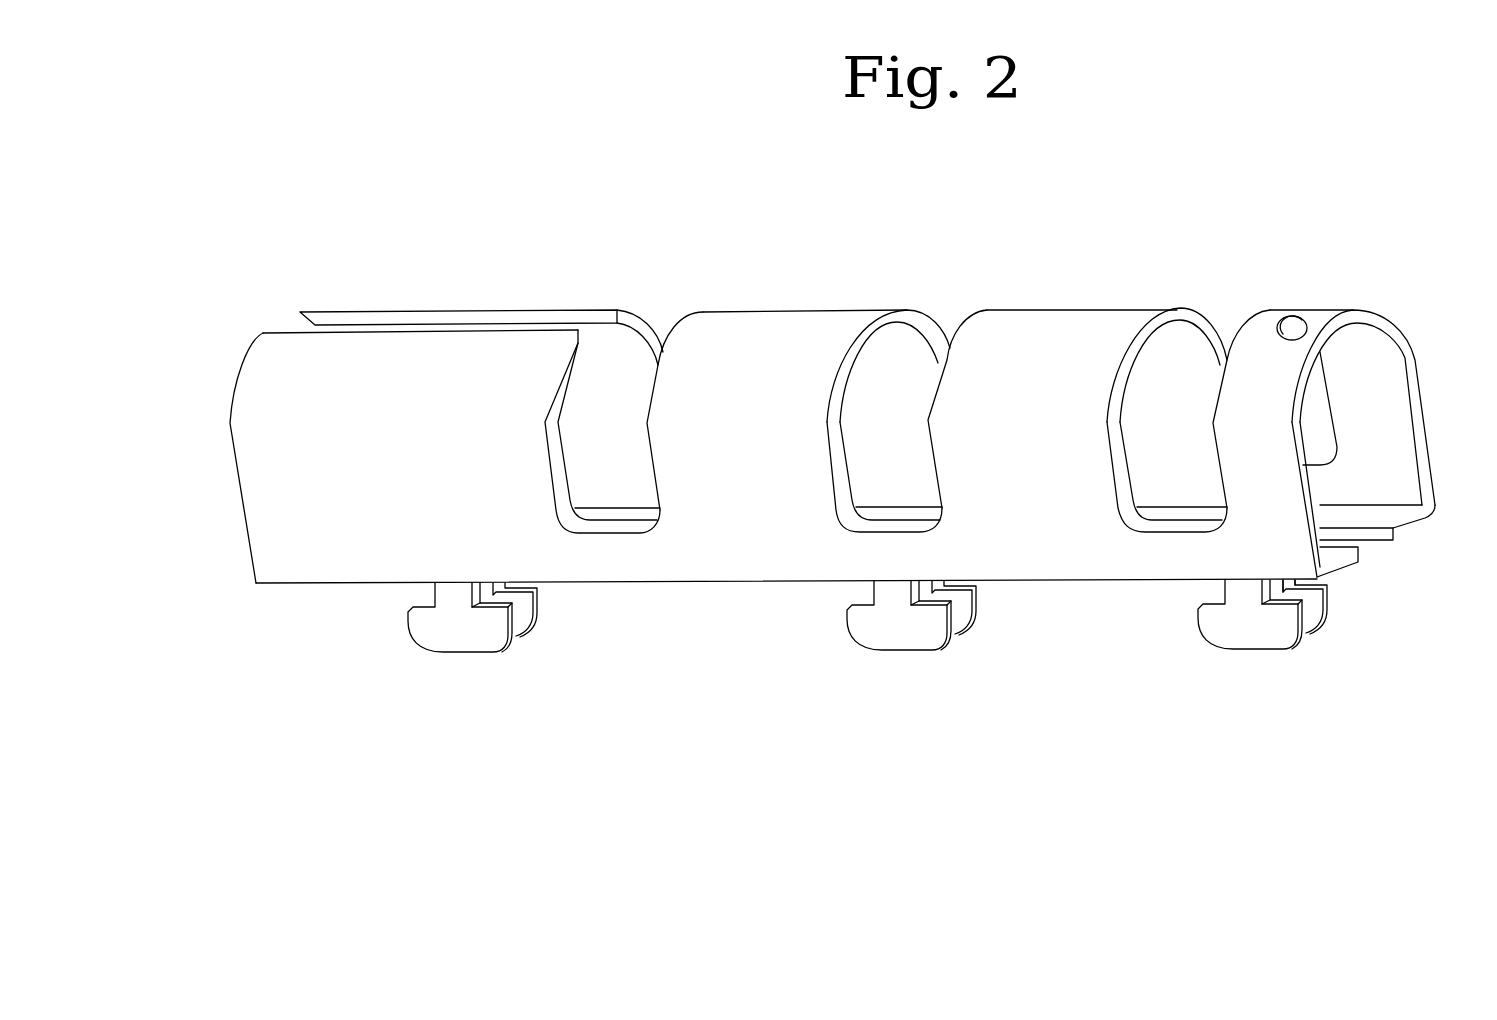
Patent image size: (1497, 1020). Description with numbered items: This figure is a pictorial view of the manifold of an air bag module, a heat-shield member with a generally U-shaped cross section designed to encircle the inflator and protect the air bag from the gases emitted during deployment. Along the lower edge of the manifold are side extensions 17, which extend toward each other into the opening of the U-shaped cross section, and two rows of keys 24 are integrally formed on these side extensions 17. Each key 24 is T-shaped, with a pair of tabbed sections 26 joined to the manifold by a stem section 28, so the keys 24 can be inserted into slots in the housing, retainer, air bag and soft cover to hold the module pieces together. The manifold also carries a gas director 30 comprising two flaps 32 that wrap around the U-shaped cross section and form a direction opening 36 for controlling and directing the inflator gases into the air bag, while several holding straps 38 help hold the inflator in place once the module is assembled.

The gas director 30 is at (245, 327).
The flaps 32 is at (262, 375).
The direction opening 36 is at (285, 327).
The holding straps 38 is at (813, 310).
The side extensions 17 is at (1393, 512).
The keys 24 is at (473, 632).
The tabbed sections 26 is at (1366, 618).
The stem section 28 is at (1214, 633).